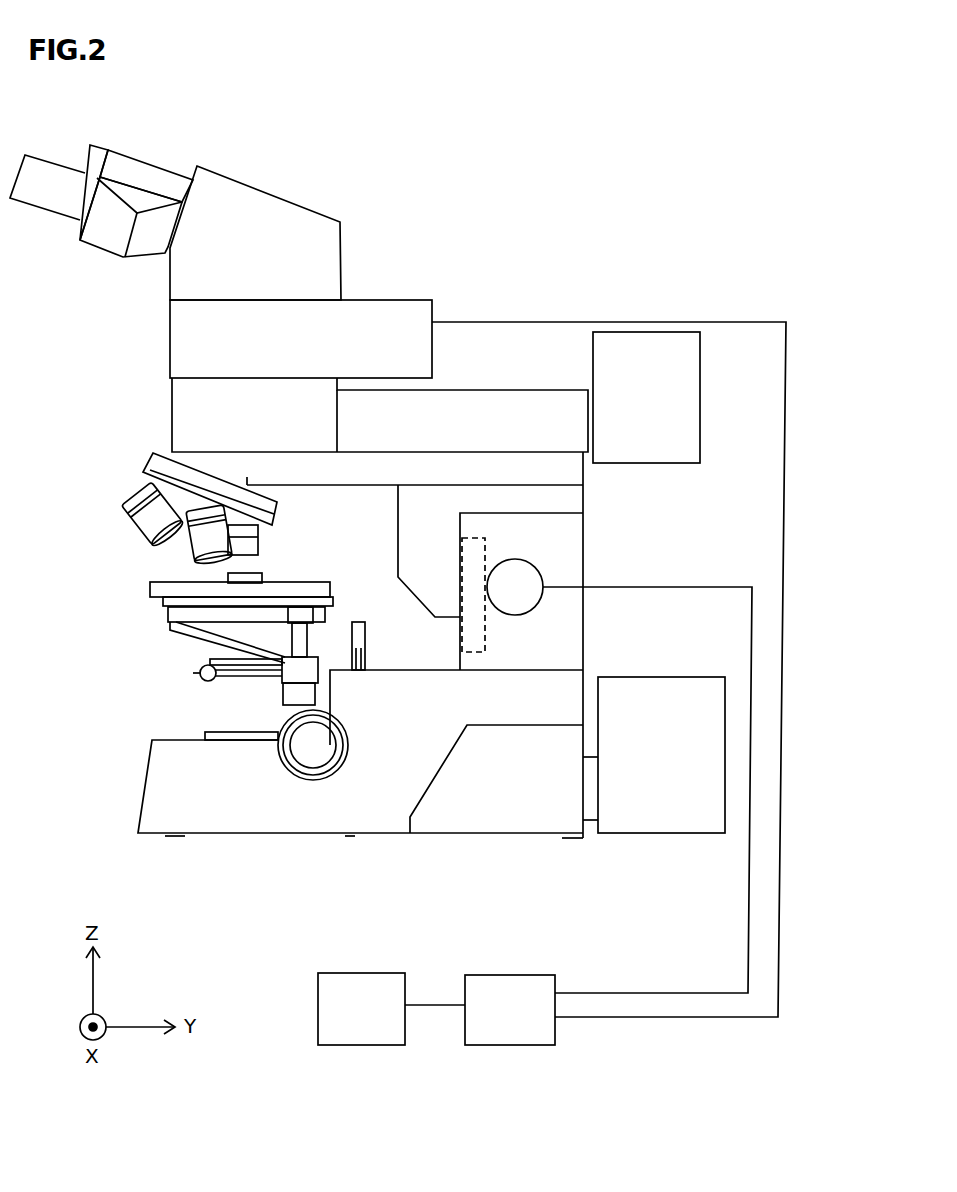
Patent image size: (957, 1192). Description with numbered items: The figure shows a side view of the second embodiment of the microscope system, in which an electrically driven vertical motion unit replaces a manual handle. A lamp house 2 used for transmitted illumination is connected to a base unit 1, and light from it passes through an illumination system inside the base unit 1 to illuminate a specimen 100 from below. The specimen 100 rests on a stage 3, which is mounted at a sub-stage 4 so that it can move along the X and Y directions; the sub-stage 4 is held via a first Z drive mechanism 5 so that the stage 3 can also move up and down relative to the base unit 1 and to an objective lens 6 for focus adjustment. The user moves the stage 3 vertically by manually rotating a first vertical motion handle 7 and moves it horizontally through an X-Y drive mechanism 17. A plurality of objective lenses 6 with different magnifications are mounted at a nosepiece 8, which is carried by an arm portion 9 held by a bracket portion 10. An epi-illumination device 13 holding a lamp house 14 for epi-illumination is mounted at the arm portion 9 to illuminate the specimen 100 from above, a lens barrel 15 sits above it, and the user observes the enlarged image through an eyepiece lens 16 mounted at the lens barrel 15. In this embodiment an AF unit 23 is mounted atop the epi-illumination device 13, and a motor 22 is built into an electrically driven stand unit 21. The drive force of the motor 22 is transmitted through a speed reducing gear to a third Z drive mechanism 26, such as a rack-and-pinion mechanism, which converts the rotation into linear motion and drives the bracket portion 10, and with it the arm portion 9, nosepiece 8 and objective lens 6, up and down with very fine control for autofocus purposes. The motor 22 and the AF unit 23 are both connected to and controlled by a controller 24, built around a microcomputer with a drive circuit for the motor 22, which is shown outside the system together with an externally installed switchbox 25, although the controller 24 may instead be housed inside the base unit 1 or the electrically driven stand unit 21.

The base unit 1 is at (257, 822).
The lamp house 2 is at (678, 822).
The stage 3 is at (158, 590).
The sub-stage 4 is at (178, 628).
The first Z drive mechanism 5 is at (367, 657).
The objective lens 6 is at (253, 545).
The first vertical motion handle 7 is at (348, 735).
The nosepiece 8 is at (148, 467).
The arm portion 9 is at (568, 470).
The bracket portion 10 is at (568, 502).
The epi-illumination device 13 is at (345, 410).
The lamp house 14 is at (650, 362).
The lens barrel 15 is at (313, 230).
The eyepiece lens 16 is at (41, 202).
The X-Y drive mechanism 17 is at (293, 692).
The electrically driven stand unit 21 is at (570, 640).
The motor 22 is at (540, 570).
The AF unit 23 is at (415, 315).
The controller 24 is at (527, 975).
The switchbox 25 is at (375, 973).
The third Z drive mechanism 26 is at (472, 638).
The specimen 100 is at (262, 575).